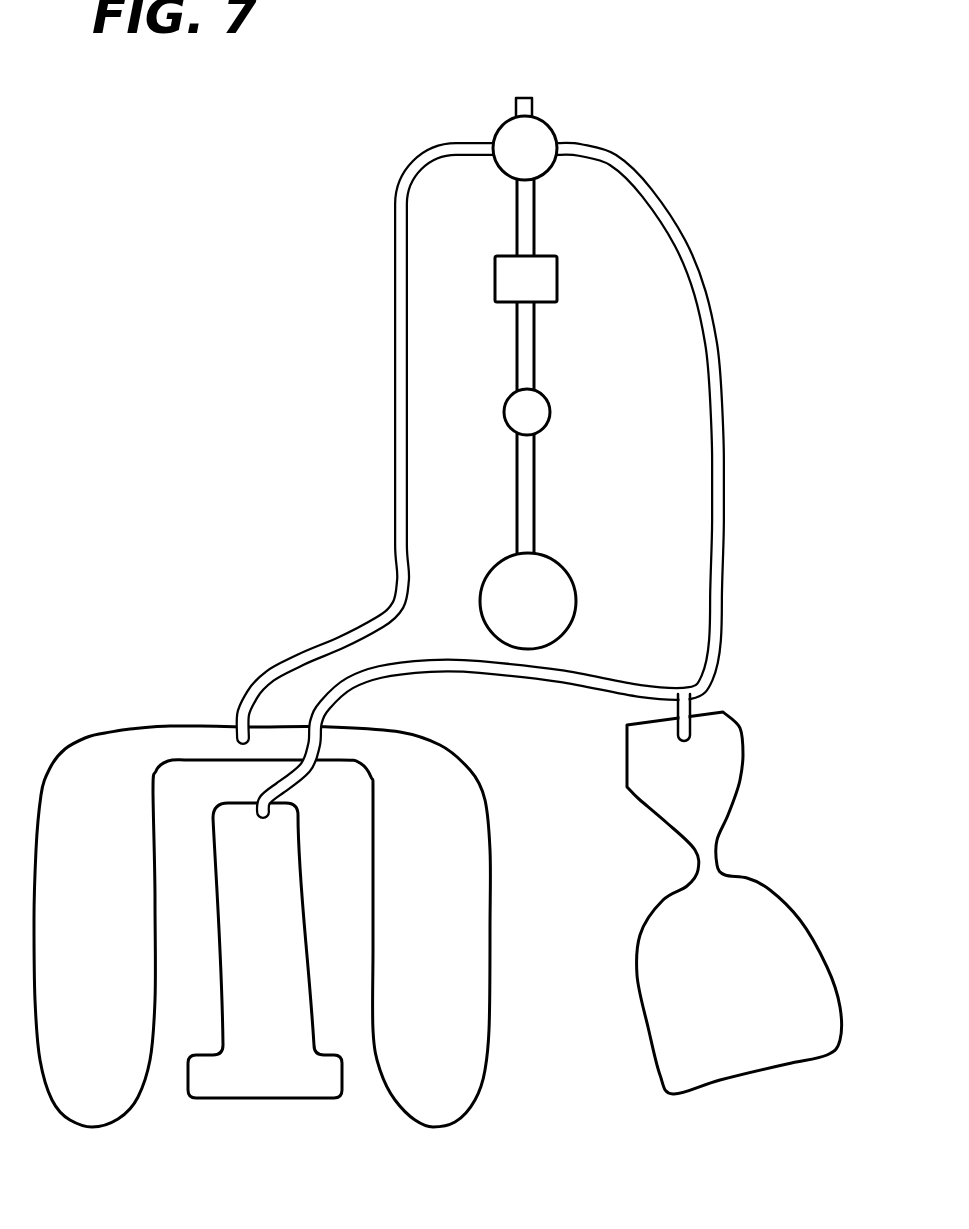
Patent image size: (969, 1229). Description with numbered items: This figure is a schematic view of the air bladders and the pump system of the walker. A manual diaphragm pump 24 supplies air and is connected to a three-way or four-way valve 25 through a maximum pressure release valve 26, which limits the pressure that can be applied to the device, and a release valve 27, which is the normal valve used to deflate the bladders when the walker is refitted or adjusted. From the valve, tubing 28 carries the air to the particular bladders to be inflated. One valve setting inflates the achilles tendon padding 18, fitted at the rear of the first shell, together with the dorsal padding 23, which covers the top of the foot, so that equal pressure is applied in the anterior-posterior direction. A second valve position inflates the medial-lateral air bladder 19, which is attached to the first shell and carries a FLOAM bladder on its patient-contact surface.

The achilles tendon padding 18 is at (300, 1090).
The air bladder 19 is at (85, 738).
The dorsal padding 23 is at (797, 917).
The manual diaphragm pump 24 is at (568, 574).
The three-way or four-way valve 25 is at (505, 122).
The maximum pressure release valve 26 is at (558, 275).
The release valve 27 is at (551, 417).
The tubing 28 is at (368, 623).